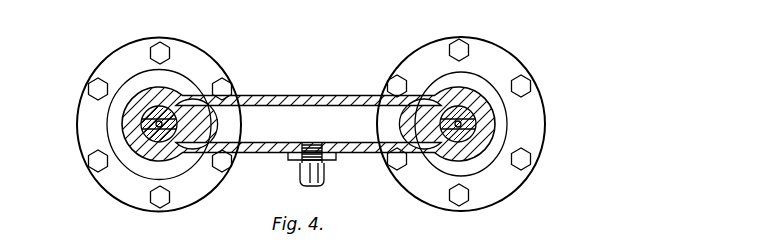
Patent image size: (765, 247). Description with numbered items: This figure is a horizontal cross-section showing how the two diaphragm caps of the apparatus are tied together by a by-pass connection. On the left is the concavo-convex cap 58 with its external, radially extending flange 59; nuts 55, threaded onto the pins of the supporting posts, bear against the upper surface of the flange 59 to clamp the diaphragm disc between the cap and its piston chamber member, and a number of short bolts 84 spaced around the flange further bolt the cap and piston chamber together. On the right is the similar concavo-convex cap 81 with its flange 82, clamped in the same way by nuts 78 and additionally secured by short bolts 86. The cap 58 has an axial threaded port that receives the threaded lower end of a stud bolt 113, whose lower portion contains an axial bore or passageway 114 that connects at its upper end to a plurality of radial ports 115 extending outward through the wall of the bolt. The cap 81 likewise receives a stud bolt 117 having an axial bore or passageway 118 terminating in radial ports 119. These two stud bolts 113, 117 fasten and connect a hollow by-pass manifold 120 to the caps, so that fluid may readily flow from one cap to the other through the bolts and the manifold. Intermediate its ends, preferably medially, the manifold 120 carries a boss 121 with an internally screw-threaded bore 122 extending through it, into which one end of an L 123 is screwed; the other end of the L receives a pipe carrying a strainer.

The nuts 55 is at (166, 42).
The concavo-convex cap 58 is at (143, 84).
The flange 59 is at (197, 63).
The short bolts 84 is at (89, 86).
The stud bolt 113 is at (142, 146).
The axial bore or passageway 114 is at (177, 117).
The radial ports 115 is at (180, 126).
The hollow by-pass manifold 120 is at (337, 76).
The boss 121 is at (332, 160).
The internally screw-threaded bore 122 is at (290, 160).
The L 123 is at (314, 178).
The nuts 78 is at (463, 41).
The concavo-convex cap 81 is at (476, 83).
The flange 82 is at (528, 118).
The short bolts 86 is at (397, 75).
The stud bolt 117 is at (480, 133).
The axial bore or passageway 118 is at (450, 128).
The radial ports 119 is at (450, 123).